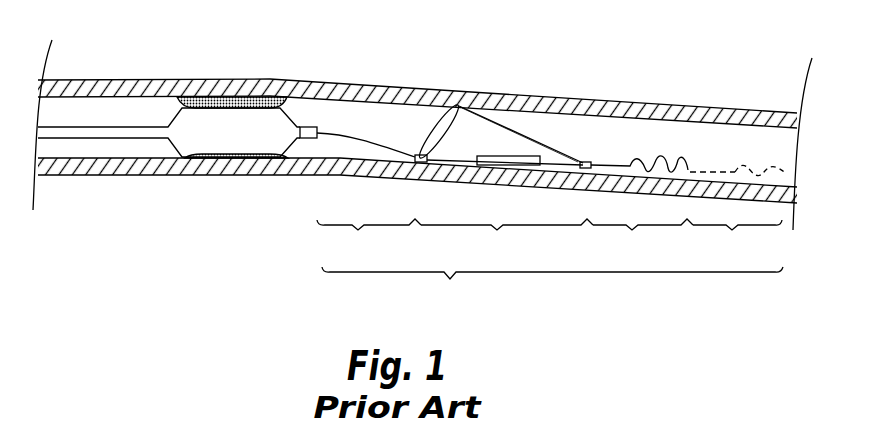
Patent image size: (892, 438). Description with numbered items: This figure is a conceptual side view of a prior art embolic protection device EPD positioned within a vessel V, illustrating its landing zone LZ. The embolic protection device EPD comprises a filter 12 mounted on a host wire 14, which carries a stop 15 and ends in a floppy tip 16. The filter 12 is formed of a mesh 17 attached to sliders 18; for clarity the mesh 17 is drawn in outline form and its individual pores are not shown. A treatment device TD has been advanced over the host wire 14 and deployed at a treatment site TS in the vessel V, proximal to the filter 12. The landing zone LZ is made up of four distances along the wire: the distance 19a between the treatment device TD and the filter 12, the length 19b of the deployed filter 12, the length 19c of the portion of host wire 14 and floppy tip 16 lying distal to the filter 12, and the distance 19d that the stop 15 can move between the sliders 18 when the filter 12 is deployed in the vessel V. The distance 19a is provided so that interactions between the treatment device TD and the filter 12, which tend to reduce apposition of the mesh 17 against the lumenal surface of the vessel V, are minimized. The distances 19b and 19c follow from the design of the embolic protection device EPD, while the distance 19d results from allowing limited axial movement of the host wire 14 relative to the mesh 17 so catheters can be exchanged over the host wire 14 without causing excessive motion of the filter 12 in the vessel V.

The filter 12 is at (539, 129).
The host wire 14 is at (349, 134).
The stop 15 is at (486, 181).
The floppy tip 16 is at (648, 160).
The mesh 17 is at (458, 106).
The sliders 18 is at (418, 155).
The distance between treatment device and filter 19a is at (369, 240).
The length of deployed filter 19b is at (507, 240).
The length of host wire portion and floppy tip distal to filter 19c is at (643, 240).
The distance stop can move between sliders 19d is at (737, 241).
The treatment device TD is at (250, 58).
The treatment site TS is at (227, 161).
The vessel V is at (147, 176).
The embolic protection device EPD is at (531, 88).
The landing zone LZ is at (552, 290).